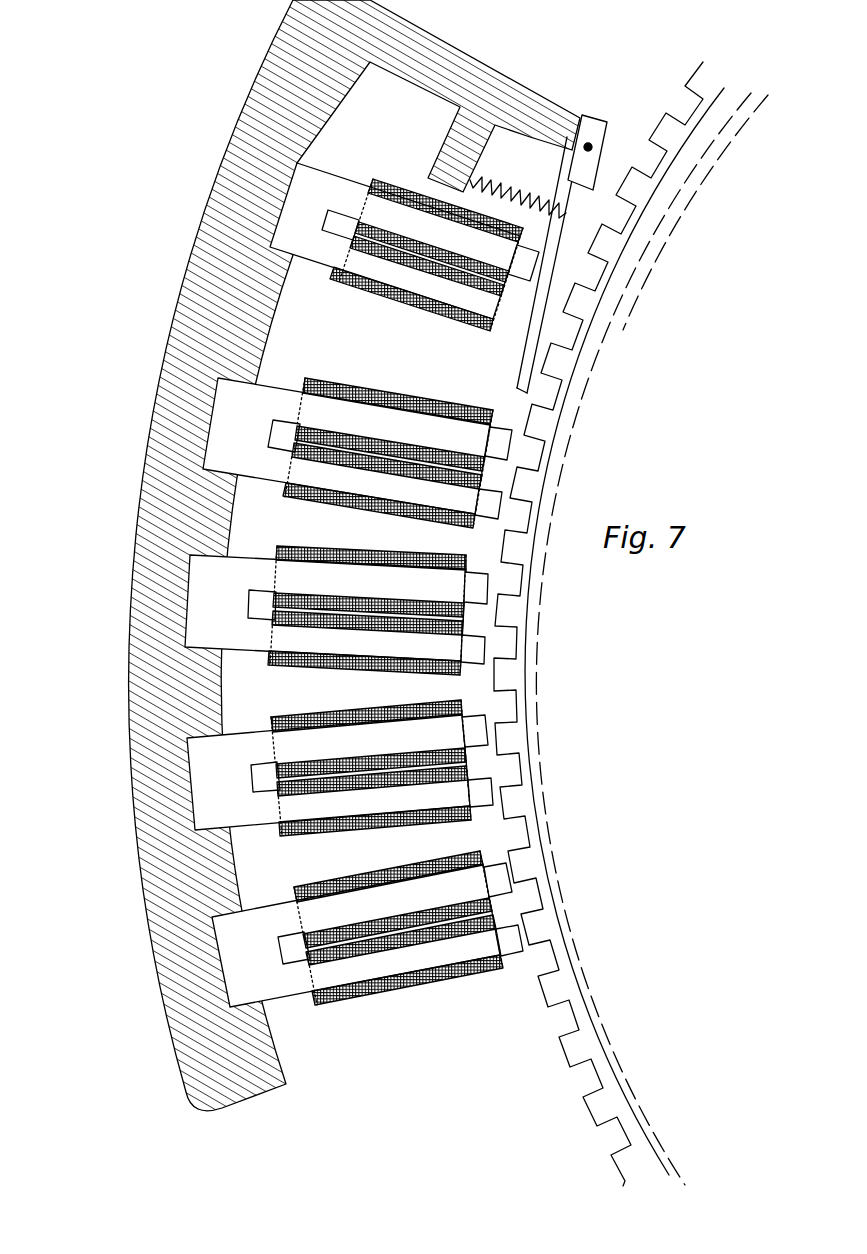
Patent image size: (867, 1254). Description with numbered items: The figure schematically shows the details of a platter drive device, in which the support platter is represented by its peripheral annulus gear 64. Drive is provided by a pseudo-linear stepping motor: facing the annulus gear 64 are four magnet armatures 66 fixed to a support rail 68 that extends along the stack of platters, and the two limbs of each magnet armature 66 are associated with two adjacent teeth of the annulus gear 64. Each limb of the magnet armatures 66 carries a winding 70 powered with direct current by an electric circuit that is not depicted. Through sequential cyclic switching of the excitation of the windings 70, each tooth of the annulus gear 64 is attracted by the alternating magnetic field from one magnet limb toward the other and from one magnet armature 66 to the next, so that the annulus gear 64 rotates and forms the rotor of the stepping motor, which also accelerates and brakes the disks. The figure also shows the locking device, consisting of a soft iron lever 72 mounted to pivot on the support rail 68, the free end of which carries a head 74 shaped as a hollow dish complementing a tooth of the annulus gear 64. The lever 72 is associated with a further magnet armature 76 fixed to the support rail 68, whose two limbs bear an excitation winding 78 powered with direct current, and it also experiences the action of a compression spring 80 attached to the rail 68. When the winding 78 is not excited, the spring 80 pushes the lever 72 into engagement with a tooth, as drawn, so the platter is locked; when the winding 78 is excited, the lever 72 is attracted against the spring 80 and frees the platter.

The annulus gear 64 is at (547, 997).
The magnet armature 66 is at (228, 422).
The support rail 68 is at (177, 1020).
The winding 70 is at (337, 1007).
The soft iron lever 72 is at (582, 188).
The head 74 is at (540, 400).
The magnet armature 76 is at (292, 197).
The excitation winding 78 is at (382, 180).
The compression spring 80 is at (480, 170).